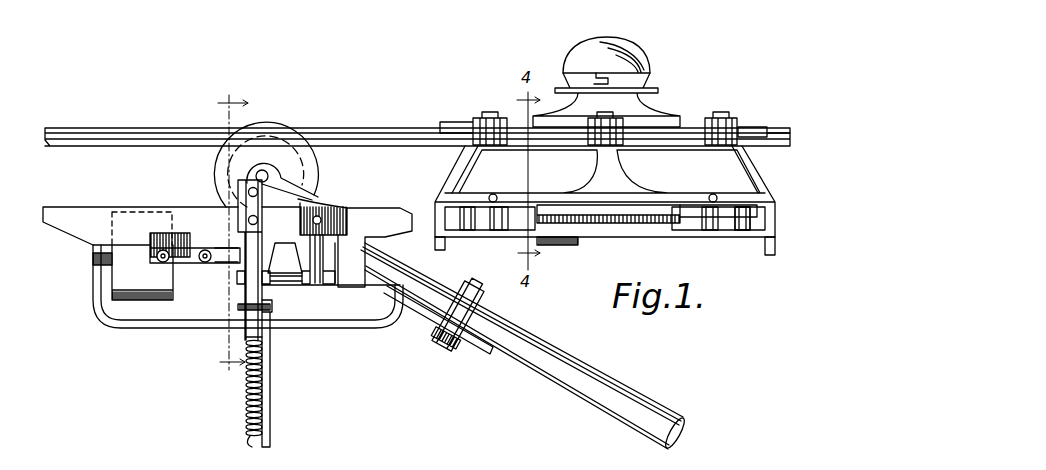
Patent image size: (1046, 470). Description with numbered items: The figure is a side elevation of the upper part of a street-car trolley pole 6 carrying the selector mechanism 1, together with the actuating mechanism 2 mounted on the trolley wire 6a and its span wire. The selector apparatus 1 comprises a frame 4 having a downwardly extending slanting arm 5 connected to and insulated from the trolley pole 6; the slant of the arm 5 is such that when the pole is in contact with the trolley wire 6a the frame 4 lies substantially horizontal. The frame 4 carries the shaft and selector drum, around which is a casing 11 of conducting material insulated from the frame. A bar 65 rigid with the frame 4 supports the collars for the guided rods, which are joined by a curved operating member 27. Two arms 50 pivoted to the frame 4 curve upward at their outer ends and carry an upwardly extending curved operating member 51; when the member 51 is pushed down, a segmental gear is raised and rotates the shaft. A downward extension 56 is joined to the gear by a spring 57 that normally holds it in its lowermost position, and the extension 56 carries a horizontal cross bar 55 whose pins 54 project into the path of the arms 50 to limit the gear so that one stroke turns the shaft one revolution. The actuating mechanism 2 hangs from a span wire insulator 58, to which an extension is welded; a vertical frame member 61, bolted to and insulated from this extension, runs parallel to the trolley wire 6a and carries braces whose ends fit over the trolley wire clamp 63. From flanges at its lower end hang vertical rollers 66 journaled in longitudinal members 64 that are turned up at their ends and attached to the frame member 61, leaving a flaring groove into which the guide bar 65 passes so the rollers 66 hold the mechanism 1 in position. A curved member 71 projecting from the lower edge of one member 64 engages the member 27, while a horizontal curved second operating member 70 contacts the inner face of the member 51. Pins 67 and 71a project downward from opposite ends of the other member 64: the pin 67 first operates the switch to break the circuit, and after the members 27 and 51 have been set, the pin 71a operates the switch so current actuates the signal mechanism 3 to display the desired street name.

The selector mechanism 1 is at (161, 182).
The actuating mechanism 2 is at (605, 191).
The signal mechanism 3 is at (232, 234).
The frame 4 is at (356, 275).
The slanting arm 5 is at (468, 338).
The trolley pole 6 is at (561, 347).
The trolley wire 6a is at (340, 132).
The casing 11 is at (140, 303).
The curved operating member 27 is at (175, 255).
The arms 50 is at (315, 263).
The curved operating member 51 is at (303, 207).
The pins 54 is at (242, 307).
The horizontal cross bar 55 is at (270, 310).
The downward extension 56 is at (266, 413).
The spring 57 is at (249, 402).
The span wire insulator 58 is at (640, 58).
The vertical frame member 61 is at (472, 160).
The trolley wire clamp 63 is at (448, 124).
The longitudinally extending members 64 is at (697, 237).
The vertical rollers 66 is at (744, 228).
The bar 65 is at (93, 208).
The pin 67 is at (446, 247).
The second operating member 70 is at (615, 223).
The operating member 71 is at (575, 243).
The pin 71a is at (772, 255).